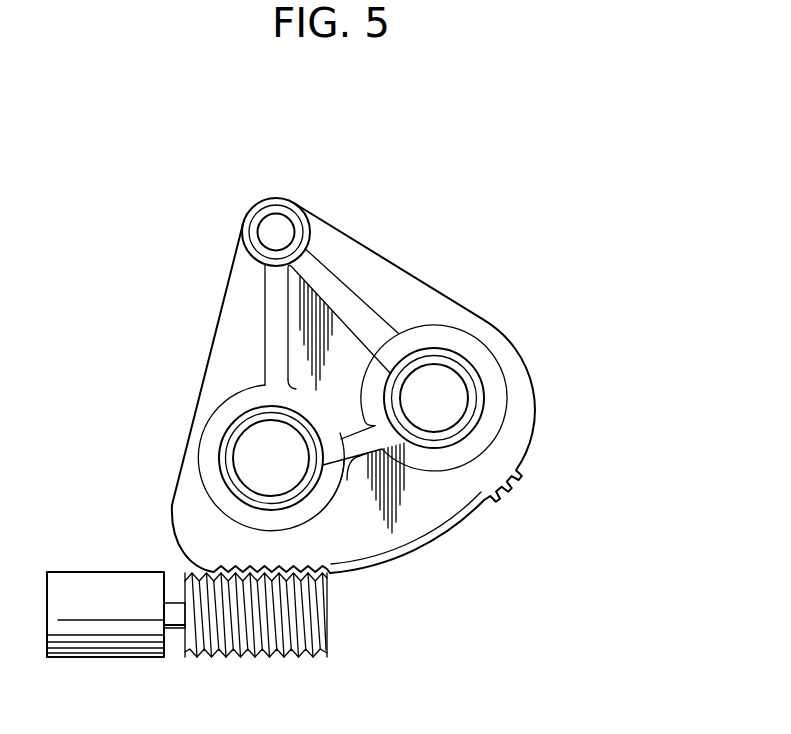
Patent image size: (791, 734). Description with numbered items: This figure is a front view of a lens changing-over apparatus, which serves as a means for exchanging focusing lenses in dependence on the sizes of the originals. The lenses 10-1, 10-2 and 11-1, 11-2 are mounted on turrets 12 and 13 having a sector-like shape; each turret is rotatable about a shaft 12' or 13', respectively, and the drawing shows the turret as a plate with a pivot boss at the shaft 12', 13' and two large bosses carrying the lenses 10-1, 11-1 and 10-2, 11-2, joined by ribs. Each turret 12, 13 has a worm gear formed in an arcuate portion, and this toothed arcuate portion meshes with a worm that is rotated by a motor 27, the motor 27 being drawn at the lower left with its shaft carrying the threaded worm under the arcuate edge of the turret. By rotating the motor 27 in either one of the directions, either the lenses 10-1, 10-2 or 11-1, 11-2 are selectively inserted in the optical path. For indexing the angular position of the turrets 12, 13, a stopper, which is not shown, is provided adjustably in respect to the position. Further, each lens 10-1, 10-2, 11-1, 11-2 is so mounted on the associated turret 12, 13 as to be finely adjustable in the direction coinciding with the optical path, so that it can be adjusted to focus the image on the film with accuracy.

The turret 12 is at (353, 388).
The turret 13 is at (353, 388).
The shaft 12' is at (349, 220).
The shaft 13' is at (349, 220).
The lens 10-1 is at (185, 454).
The lens 11-1 is at (250, 448).
The lens 10-2 is at (525, 382).
The lens 11-2 is at (443, 377).
The motor 27 is at (145, 657).